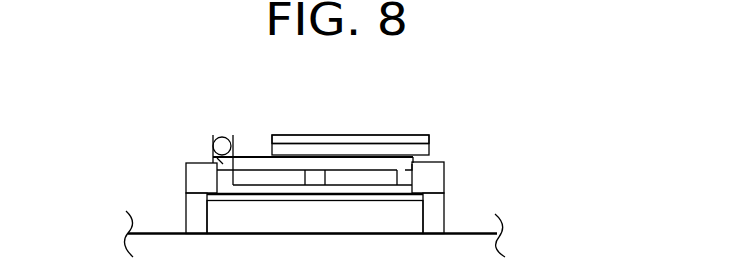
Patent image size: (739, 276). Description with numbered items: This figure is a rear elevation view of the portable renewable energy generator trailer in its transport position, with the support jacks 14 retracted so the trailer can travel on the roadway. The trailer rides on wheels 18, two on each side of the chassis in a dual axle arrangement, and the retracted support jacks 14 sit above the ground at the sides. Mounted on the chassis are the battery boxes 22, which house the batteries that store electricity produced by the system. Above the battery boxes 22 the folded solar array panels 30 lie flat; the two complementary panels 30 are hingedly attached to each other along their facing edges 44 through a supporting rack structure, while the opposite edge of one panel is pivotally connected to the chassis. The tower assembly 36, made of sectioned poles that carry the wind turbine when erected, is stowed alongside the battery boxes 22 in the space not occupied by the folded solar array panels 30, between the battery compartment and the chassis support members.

The support jacks 14 is at (188, 163).
The wheels 18 is at (448, 213).
The battery boxes 22 is at (252, 156).
The solar array panels 30 is at (375, 134).
The tower assembly 36 is at (228, 138).
The facing edges 44 is at (272, 135).